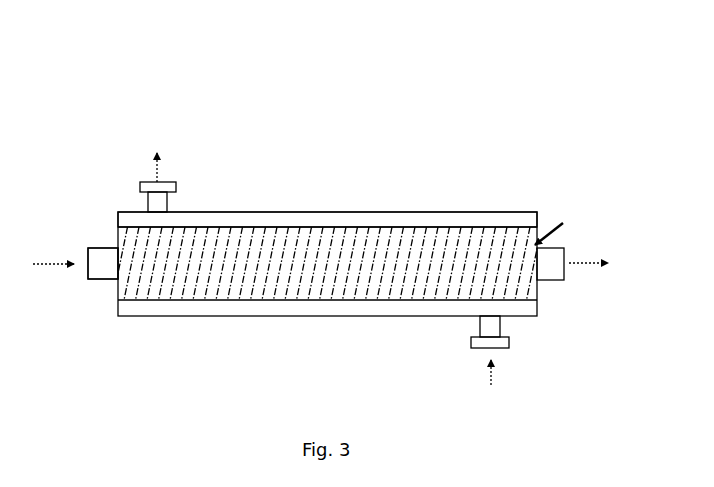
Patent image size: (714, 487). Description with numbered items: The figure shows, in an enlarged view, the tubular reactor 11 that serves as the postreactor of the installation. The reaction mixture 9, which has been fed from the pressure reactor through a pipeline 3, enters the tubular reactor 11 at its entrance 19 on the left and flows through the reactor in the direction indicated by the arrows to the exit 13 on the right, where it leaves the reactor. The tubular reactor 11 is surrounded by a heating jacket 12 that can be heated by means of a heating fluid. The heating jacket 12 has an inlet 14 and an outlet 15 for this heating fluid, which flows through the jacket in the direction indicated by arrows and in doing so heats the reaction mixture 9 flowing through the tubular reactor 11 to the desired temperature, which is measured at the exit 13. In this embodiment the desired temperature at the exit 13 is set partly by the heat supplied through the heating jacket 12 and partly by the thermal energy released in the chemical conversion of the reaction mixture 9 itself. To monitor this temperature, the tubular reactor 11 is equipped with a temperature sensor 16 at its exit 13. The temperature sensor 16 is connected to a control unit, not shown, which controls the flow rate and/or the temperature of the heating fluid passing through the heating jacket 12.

The pipeline 3 is at (106, 248).
The reaction mixture 9 is at (272, 283).
The tubular reactor 11 is at (381, 179).
The heating jacket 12 is at (235, 212).
The exit 13 is at (548, 281).
The inlet 14 is at (506, 350).
The outlet 15 is at (143, 181).
The temperature sensor 16 is at (547, 223).
The entrance 19 is at (118, 264).